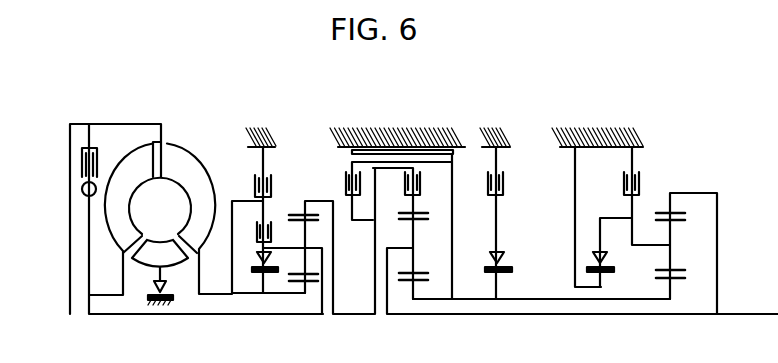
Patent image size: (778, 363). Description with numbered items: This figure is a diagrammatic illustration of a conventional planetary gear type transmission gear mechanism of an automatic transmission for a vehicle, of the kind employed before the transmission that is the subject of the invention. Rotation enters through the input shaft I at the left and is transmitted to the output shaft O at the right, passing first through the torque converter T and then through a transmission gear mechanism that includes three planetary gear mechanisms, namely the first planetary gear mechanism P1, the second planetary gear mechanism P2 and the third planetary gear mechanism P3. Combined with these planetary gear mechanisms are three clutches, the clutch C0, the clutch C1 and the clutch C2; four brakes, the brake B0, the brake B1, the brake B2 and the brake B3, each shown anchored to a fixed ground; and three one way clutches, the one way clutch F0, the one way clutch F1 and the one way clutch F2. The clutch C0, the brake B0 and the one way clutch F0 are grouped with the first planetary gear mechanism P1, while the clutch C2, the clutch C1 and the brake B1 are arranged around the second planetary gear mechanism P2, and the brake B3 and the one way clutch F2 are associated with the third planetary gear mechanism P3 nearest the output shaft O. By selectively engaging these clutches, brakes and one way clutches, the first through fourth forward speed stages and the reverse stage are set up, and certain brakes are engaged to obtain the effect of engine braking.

The input shaft I is at (70, 314).
The torque converter T is at (178, 283).
The brake B0 is at (271, 210).
The clutch C0 is at (268, 247).
The one way clutch F0 is at (256, 272).
The first planetary gear mechanism P1 is at (308, 288).
The clutch C2 is at (385, 191).
The brake B1 is at (500, 213).
The clutch C1 is at (410, 233).
The second planetary gear mechanism P2 is at (406, 290).
The brake B2 is at (508, 213).
The one way clutch F1 is at (511, 269).
The brake B3 is at (611, 207).
The one way clutch F2 is at (612, 252).
The third planetary gear mechanism P3 is at (678, 285).
The output shaft O is at (737, 314).